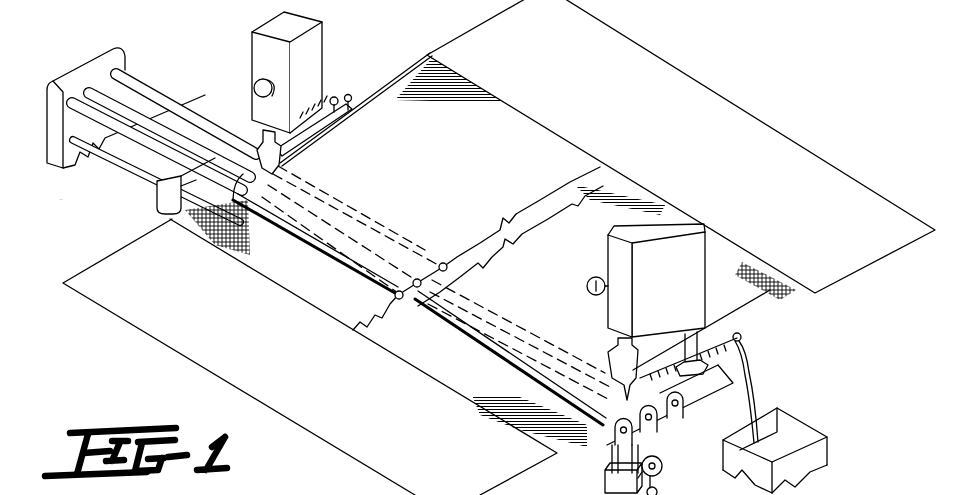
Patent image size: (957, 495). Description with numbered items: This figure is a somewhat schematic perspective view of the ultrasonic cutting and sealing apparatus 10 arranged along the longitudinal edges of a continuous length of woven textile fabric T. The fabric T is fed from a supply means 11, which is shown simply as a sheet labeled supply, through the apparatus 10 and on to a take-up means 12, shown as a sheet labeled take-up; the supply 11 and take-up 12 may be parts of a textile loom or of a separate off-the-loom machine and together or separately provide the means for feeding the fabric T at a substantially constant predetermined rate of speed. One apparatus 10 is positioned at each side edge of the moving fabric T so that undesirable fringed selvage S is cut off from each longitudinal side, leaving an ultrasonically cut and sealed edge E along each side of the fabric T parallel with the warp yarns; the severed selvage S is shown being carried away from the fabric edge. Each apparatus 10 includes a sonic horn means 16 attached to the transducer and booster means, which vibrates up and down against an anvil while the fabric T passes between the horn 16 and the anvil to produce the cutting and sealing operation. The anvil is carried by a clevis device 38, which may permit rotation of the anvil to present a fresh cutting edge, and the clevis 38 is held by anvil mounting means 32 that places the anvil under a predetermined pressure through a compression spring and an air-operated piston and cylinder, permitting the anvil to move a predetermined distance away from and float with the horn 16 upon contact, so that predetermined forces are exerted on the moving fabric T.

The ultrasonic cutting and sealing apparatus 10 is at (325, 48).
The supply means 11 is at (172, 334).
The take-up means 12 is at (783, 137).
The sonic horn means 16 is at (236, 118).
The anvil mounting means 32 is at (600, 462).
The clevis device 38 is at (668, 425).
The textile fabric T is at (434, 164).
The fringed selvage S is at (752, 368).
The cut and sealed edge E is at (760, 306).